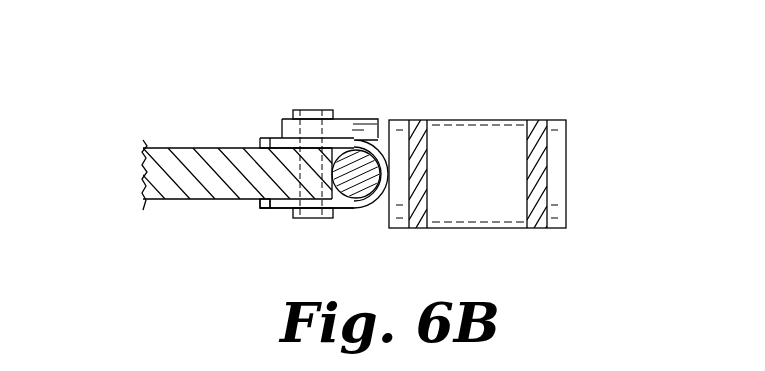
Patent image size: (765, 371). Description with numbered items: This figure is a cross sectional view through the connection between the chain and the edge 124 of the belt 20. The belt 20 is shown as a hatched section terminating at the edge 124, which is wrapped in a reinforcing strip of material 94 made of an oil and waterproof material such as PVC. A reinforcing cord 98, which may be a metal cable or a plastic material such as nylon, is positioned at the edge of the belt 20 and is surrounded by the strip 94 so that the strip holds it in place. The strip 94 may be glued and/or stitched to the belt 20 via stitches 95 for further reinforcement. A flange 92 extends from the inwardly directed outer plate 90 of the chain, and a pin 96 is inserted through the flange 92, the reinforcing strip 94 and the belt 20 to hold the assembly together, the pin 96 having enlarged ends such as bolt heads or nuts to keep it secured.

The edge of the belt 124 is at (187, 90).
The belt 20 is at (183, 147).
The flange 92 is at (282, 120).
The pin 96 is at (313, 110).
The stitches 95 is at (260, 205).
The reinforcing cord 98 is at (378, 130).
The reinforcing strip of material 94 is at (347, 210).
The outer plate 90 is at (397, 123).